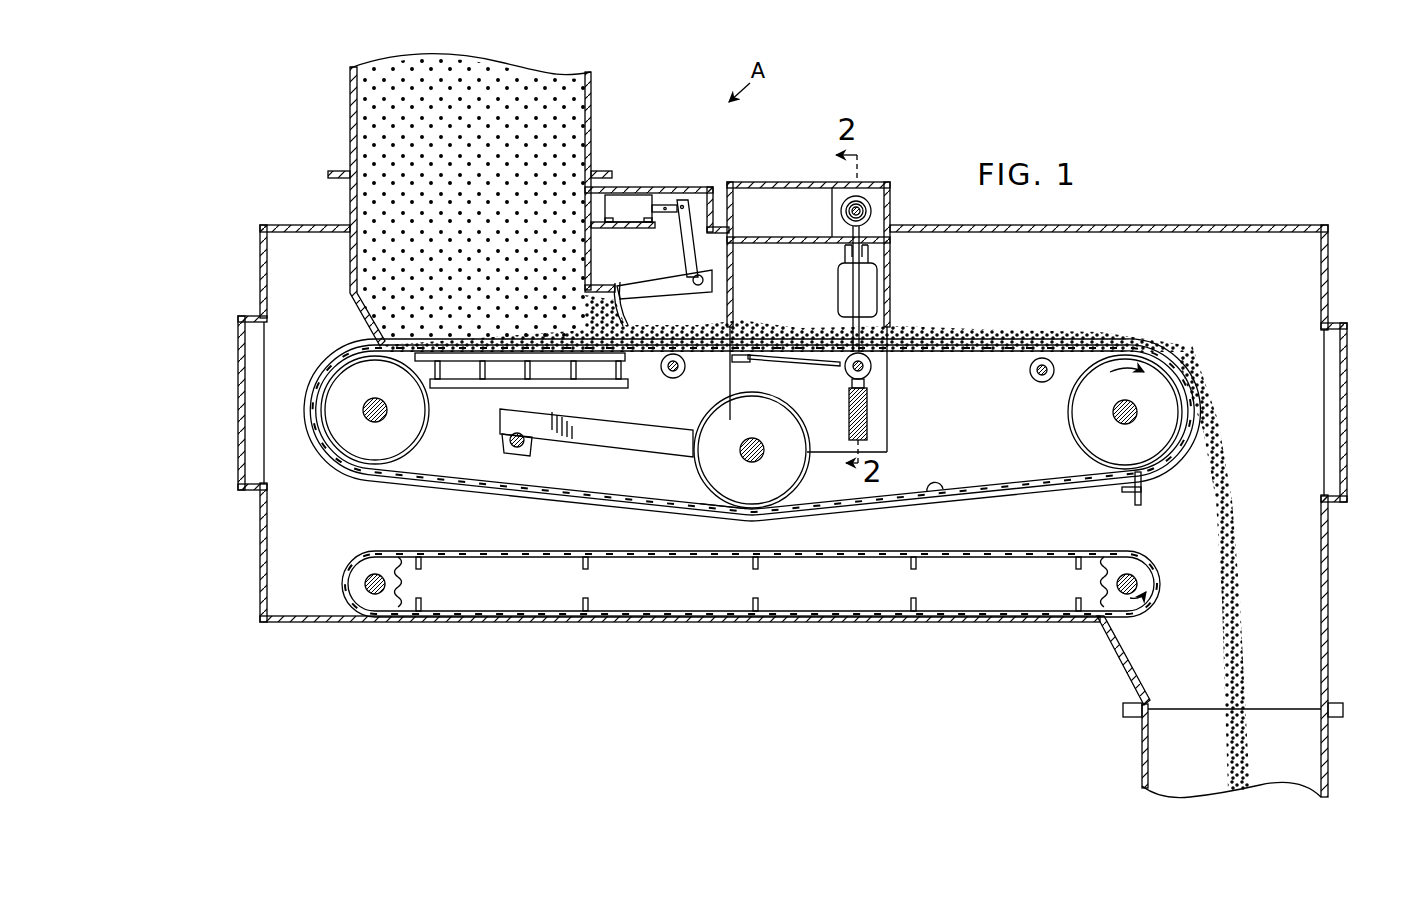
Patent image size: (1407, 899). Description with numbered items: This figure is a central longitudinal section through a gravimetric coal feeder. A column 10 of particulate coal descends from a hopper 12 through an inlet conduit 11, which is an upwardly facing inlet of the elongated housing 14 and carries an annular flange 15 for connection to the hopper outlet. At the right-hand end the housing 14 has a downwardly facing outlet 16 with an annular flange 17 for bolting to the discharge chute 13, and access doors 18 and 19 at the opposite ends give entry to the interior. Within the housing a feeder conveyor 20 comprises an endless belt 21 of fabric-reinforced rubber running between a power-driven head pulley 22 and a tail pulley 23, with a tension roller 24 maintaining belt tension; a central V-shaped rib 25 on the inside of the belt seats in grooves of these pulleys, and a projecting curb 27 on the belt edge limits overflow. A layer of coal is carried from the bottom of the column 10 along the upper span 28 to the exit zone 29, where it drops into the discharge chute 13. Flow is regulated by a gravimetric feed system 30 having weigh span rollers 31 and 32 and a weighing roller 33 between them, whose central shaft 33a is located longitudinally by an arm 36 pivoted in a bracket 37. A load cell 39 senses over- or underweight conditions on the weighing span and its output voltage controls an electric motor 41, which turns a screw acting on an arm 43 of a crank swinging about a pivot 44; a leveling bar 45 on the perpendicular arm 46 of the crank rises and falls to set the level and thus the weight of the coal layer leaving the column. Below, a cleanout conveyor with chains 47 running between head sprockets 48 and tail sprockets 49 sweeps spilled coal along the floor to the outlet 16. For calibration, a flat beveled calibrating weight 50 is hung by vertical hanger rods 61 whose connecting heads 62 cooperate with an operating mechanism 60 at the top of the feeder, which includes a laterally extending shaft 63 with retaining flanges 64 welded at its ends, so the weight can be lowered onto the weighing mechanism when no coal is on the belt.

The column of particulate coal 10 is at (572, 102).
The inlet conduit 11 is at (349, 212).
The hopper 12 is at (349, 100).
The discharge chute 13 is at (1141, 762).
The housing 14 is at (298, 624).
The annular flange 15 is at (332, 174).
The outlet 16 is at (1110, 652).
The annular flange 17 is at (1337, 705).
The access door 18 is at (238, 385).
The access door 19 is at (1348, 355).
The feeder conveyor 20 is at (1037, 310).
The endless belt 21 is at (323, 358).
The head pulley 22 is at (420, 432).
The tail pulley 23 is at (1085, 425).
The tension roller 24 is at (712, 470).
The V-shaped rib 25 is at (942, 494).
The projecting curb 27 is at (808, 512).
The upper span 28 is at (737, 330).
The exit zone 29 is at (1240, 432).
The gravimetric feed system 30 is at (941, 371).
The weigh span roller 31 is at (668, 380).
The weigh span roller 32 is at (1040, 383).
The weighing roller 33 is at (870, 373).
The central shaft 33a is at (849, 377).
The arm 36 is at (810, 366).
The bracket 37 is at (735, 364).
The load cell 39 is at (880, 286).
The electric motor 41 is at (628, 198).
The arm of crank 43 is at (695, 235).
The pivot 44 is at (699, 275).
The leveling bar 45 is at (633, 302).
The arm of crank 46 is at (660, 285).
The chains 47 is at (668, 622).
The head sprocket 48 is at (402, 582).
The tail sprocket 49 is at (1101, 585).
The calibrating weight 50 is at (870, 420).
The operating mechanism 60 is at (873, 188).
The hanger rod 61 is at (843, 272).
The connecting head 62 is at (878, 232).
The shaft 63 is at (880, 212).
The retaining flange 64 is at (848, 222).